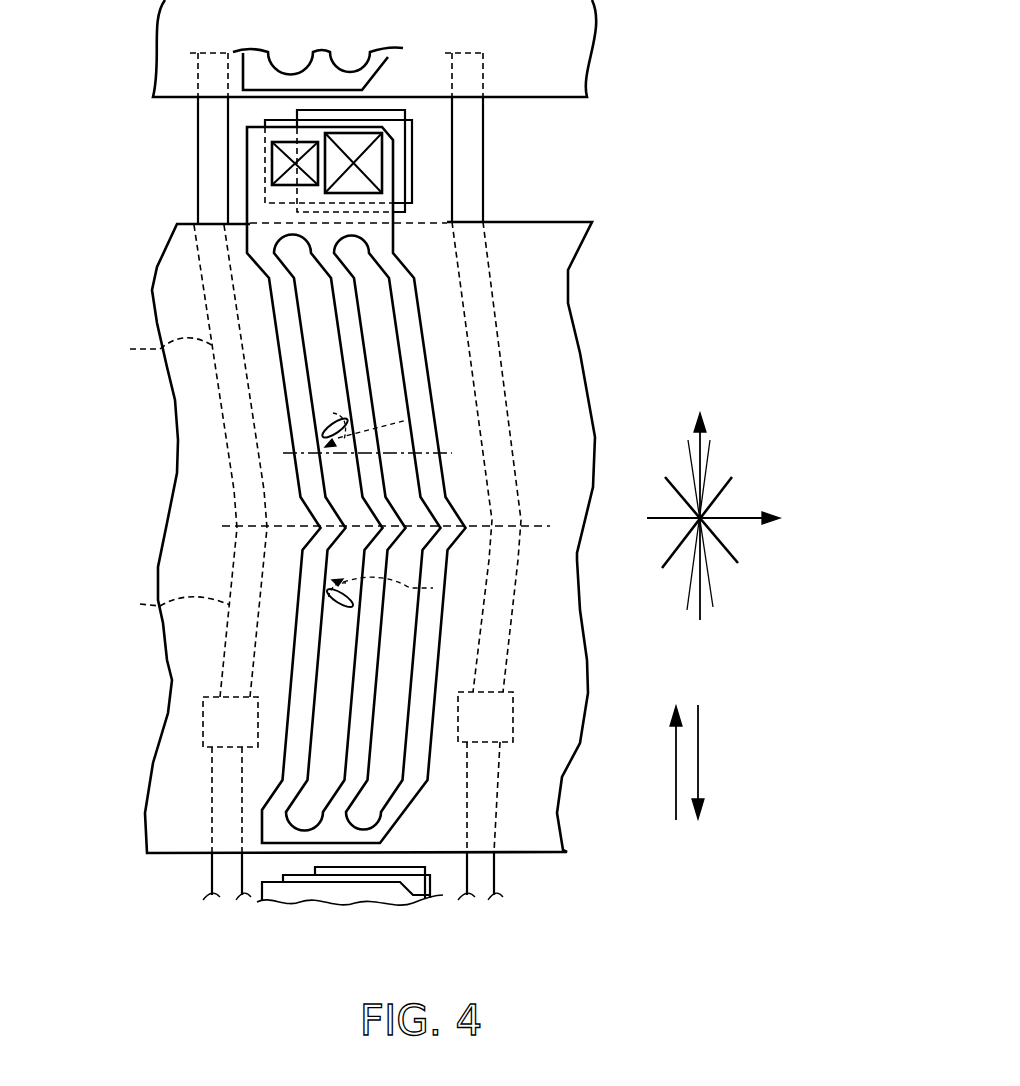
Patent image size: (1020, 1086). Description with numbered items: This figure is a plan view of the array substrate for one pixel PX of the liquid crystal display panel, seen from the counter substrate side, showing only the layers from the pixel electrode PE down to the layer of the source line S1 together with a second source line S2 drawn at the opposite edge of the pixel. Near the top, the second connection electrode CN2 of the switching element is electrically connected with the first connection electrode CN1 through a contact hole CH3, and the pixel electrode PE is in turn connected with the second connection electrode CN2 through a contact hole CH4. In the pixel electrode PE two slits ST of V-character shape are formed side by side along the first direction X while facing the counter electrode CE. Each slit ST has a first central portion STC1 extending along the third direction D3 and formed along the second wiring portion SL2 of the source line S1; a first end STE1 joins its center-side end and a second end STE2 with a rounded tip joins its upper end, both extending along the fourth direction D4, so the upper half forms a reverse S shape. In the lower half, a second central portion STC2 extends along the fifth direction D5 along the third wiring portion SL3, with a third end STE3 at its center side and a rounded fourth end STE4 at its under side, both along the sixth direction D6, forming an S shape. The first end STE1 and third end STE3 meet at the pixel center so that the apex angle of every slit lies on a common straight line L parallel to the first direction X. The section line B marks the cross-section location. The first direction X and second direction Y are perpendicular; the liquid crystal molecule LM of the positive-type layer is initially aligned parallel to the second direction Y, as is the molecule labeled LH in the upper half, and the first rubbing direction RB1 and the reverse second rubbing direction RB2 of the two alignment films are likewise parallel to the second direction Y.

The first connection electrode CN1 is at (408, 111).
The second connection electrode CN2 is at (413, 138).
The contact hole CH3 is at (383, 164).
The contact hole CH4 is at (272, 168).
The pixel PX is at (421, 246).
The pixel electrode PE is at (413, 290).
The slit ST is at (332, 351).
The liquid crystal molecule in upper half LH is at (347, 410).
The liquid crystal molecule LM is at (353, 607).
The straight line L is at (538, 525).
The section line B- B is at (366, 455).
The first end STE1 is at (404, 510).
The second end STE2 is at (346, 263).
The third end STE3 is at (398, 551).
The fourth end STE4 is at (365, 797).
The first central portion STC1 is at (376, 394).
The second central portion STC2 is at (391, 645).
The second wiring portion SL2 is at (151, 348).
The third wiring portion SL3 is at (164, 604).
The counter electrode CE is at (150, 820).
The source line S1 is at (227, 895).
The second source line S2 is at (484, 895).
The first direction X is at (721, 519).
The second direction Y is at (698, 503).
The third direction D3 is at (688, 446).
The fourth direction D4 is at (674, 488).
The fifth direction D5 is at (712, 447).
The sixth direction D6 is at (719, 490).
The first rubbing direction RB1 is at (676, 777).
The second rubbing direction RB2 is at (698, 763).